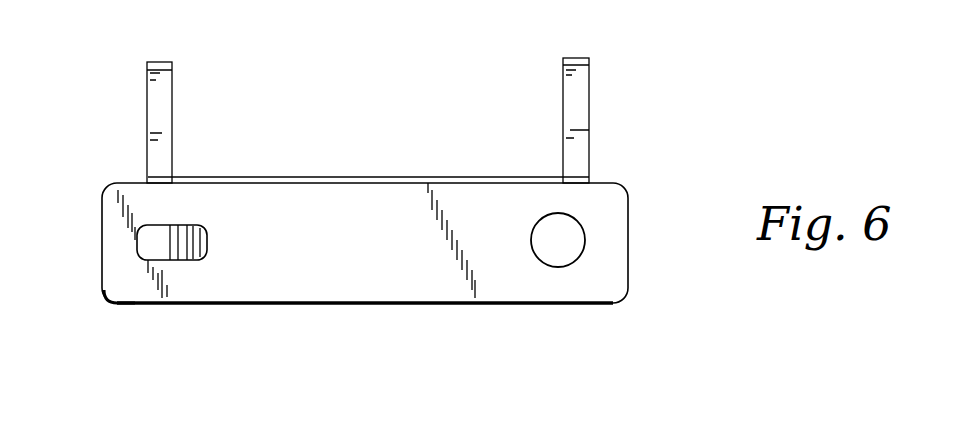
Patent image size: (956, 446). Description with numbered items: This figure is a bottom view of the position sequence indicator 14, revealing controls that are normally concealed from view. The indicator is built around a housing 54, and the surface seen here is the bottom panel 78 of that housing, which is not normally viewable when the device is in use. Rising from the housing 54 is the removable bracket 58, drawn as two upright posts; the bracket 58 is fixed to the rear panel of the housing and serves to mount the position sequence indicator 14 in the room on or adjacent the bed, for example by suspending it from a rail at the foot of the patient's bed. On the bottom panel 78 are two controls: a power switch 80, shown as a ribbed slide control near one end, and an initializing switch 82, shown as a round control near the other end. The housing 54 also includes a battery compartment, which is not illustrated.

The position sequence indicator 14 is at (613, 303).
The housing 54 is at (132, 305).
The removable bracket 58 is at (165, 105).
The bottom panel 78 is at (357, 265).
The power switch 80 is at (190, 260).
The initializing switch 82 is at (553, 252).